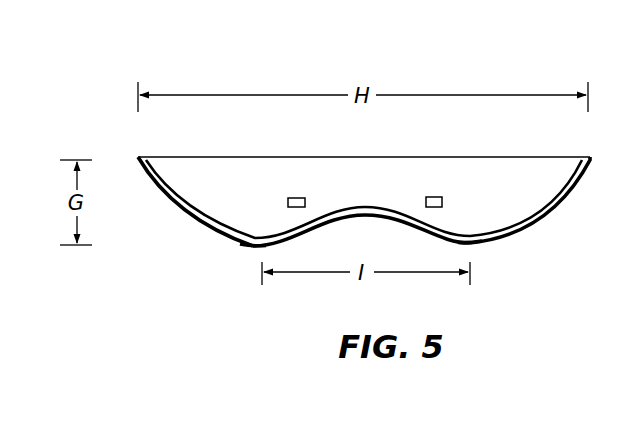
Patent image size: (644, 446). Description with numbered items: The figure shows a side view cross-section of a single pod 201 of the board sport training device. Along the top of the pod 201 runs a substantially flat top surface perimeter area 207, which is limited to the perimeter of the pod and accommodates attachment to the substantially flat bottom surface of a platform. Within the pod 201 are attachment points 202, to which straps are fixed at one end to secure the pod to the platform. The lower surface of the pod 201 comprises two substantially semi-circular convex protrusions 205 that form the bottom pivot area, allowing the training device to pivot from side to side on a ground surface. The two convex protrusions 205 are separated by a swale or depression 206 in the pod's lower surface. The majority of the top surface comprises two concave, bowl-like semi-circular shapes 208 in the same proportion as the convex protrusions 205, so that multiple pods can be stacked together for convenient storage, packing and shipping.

The pod 201 is at (171, 173).
The attachment points 202 is at (432, 187).
The semi-circular convex protrusions 205 is at (249, 249).
The swale or depression 206 is at (361, 222).
The flat top surface perimeter area 207 is at (213, 153).
The concave semi-circular shapes 208 is at (264, 222).